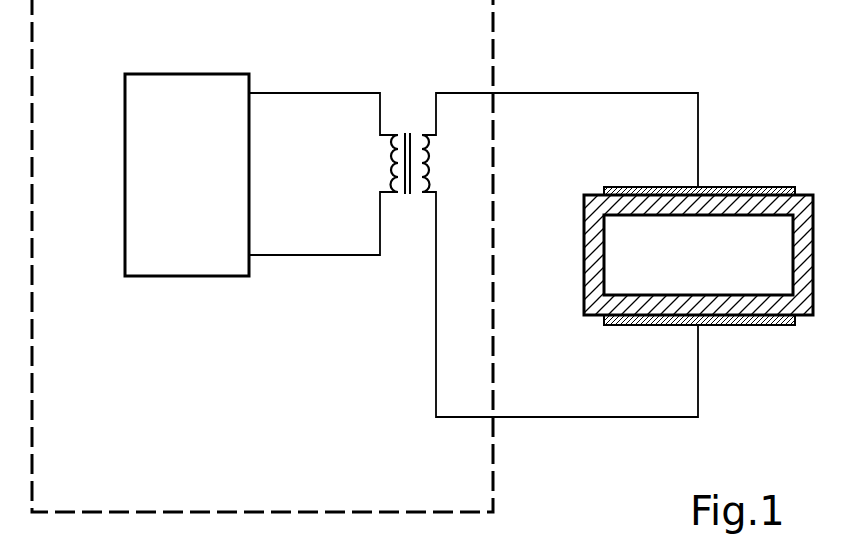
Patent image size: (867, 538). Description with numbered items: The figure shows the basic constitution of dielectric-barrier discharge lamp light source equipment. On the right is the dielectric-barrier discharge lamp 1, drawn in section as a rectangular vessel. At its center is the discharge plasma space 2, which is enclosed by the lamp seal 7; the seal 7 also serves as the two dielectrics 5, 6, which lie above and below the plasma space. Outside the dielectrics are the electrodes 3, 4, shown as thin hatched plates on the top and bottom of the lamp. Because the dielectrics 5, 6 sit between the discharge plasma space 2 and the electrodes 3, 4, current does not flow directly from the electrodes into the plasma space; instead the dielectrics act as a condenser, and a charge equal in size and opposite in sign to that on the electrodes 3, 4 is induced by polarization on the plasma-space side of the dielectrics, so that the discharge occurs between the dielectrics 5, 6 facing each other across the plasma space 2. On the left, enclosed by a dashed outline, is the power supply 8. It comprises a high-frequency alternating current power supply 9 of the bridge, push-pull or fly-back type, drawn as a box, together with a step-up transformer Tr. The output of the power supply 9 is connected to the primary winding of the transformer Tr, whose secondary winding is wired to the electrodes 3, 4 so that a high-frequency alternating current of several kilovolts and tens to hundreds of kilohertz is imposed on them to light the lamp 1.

The dielectric-barrier discharge lamp 1 is at (637, 147).
The discharge plasma space 2 is at (775, 251).
The electrode 3 is at (722, 189).
The electrode 4 is at (735, 321).
The dielectric 5 is at (767, 205).
The dielectric 6 is at (762, 305).
The lamp seal 7 is at (598, 272).
The power supply 8 is at (493, 30).
The high-frequency alternating current power supply 9 is at (185, 74).
The step-up transformer Tr is at (412, 130).